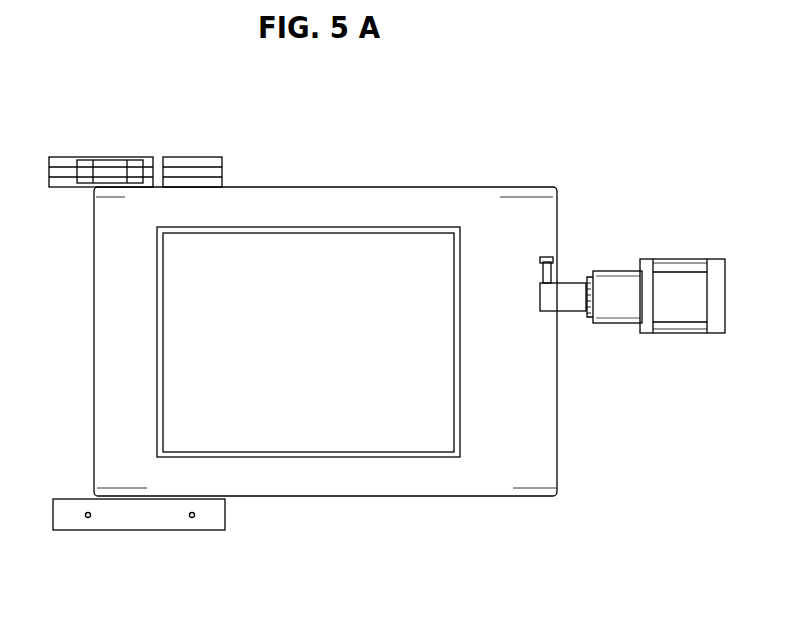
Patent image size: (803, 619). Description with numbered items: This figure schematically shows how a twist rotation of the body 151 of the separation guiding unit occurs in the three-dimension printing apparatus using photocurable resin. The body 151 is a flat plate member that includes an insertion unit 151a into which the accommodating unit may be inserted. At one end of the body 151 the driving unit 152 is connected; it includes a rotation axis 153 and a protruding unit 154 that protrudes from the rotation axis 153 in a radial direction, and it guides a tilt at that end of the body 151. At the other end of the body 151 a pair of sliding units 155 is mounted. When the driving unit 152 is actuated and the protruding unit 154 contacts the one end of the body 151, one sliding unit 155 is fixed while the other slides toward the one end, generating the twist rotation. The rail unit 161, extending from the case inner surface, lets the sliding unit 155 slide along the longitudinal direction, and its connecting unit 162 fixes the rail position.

The body 151 is at (307, 478).
The insertion unit 151a is at (395, 397).
The driving unit 152 is at (680, 283).
The rotation axis 153 is at (573, 312).
The protruding unit 154 is at (552, 271).
The sliding unit 155 is at (80, 160).
The rail unit 161 is at (135, 522).
The connecting unit 162 is at (185, 163).